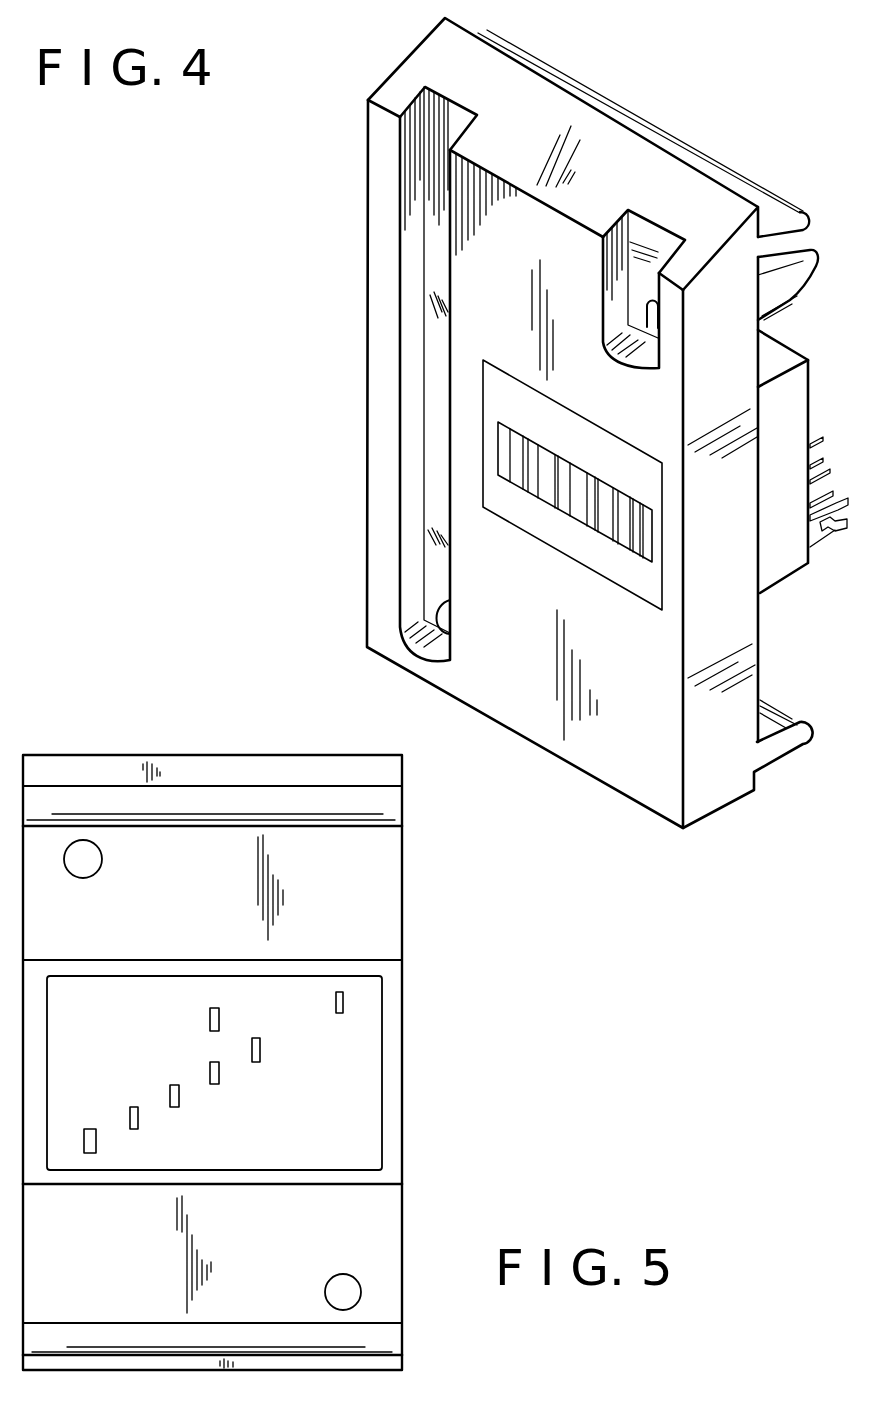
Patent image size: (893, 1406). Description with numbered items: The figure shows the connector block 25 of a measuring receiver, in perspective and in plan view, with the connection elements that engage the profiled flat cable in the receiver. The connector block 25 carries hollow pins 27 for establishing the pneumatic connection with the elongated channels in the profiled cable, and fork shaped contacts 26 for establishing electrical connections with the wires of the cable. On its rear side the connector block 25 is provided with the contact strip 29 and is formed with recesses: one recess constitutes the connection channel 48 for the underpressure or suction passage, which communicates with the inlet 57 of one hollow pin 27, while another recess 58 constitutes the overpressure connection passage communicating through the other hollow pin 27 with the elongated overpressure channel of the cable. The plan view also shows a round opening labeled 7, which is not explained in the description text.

In FIG. 4, the connector block 25 is at (590, 431).
In FIG. 5, the connector block 25 is at (385, 905).
In FIG. 4, the fork shaped contacts 26 is at (844, 492).
In FIG. 5, the fork shaped contacts 26 is at (137, 1125).
In FIG. 4, the hollow pins 27 is at (800, 264).
In FIG. 5, the hollow pins 27 is at (350, 1288).
In FIG. 4, the contact strip 29 is at (617, 541).
In FIG. 4, the connection channel 48 is at (648, 227).
In FIG. 4, the inlet 57 is at (652, 311).
In FIG. 4, the recess 58 is at (455, 113).
In FIG. 5, the mounting hole 7 is at (88, 864).